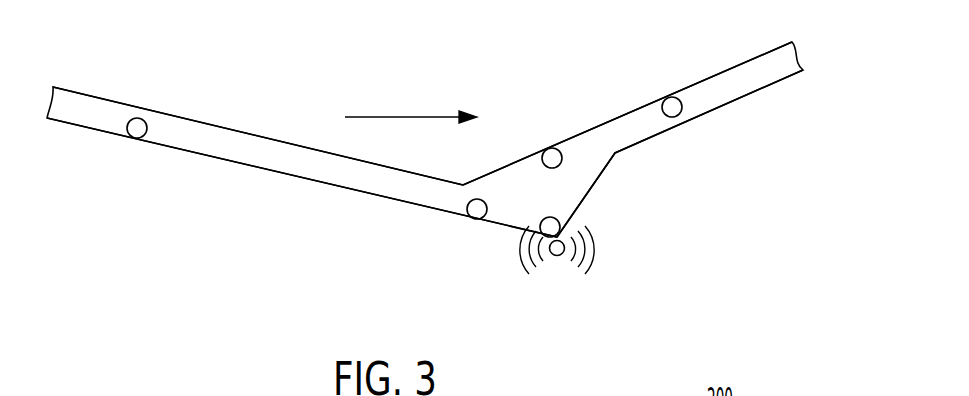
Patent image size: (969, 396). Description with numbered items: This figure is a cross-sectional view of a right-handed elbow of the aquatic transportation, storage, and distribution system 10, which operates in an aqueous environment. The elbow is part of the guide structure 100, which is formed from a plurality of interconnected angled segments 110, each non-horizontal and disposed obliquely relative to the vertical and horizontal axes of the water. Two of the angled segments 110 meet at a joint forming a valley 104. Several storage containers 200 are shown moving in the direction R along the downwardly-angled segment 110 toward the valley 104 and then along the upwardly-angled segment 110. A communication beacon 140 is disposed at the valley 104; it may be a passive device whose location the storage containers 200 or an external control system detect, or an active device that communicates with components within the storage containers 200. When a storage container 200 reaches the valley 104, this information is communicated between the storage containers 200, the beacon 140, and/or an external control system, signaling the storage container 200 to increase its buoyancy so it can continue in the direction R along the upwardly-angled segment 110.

The aquatic transportation, storage, and distribution system 10 is at (300, 97).
The guide structure 100 is at (68, 152).
The angled segments 110 is at (238, 165).
The valley 104 is at (587, 197).
The storage container 200 is at (139, 118).
The communication beacon 140 is at (557, 257).